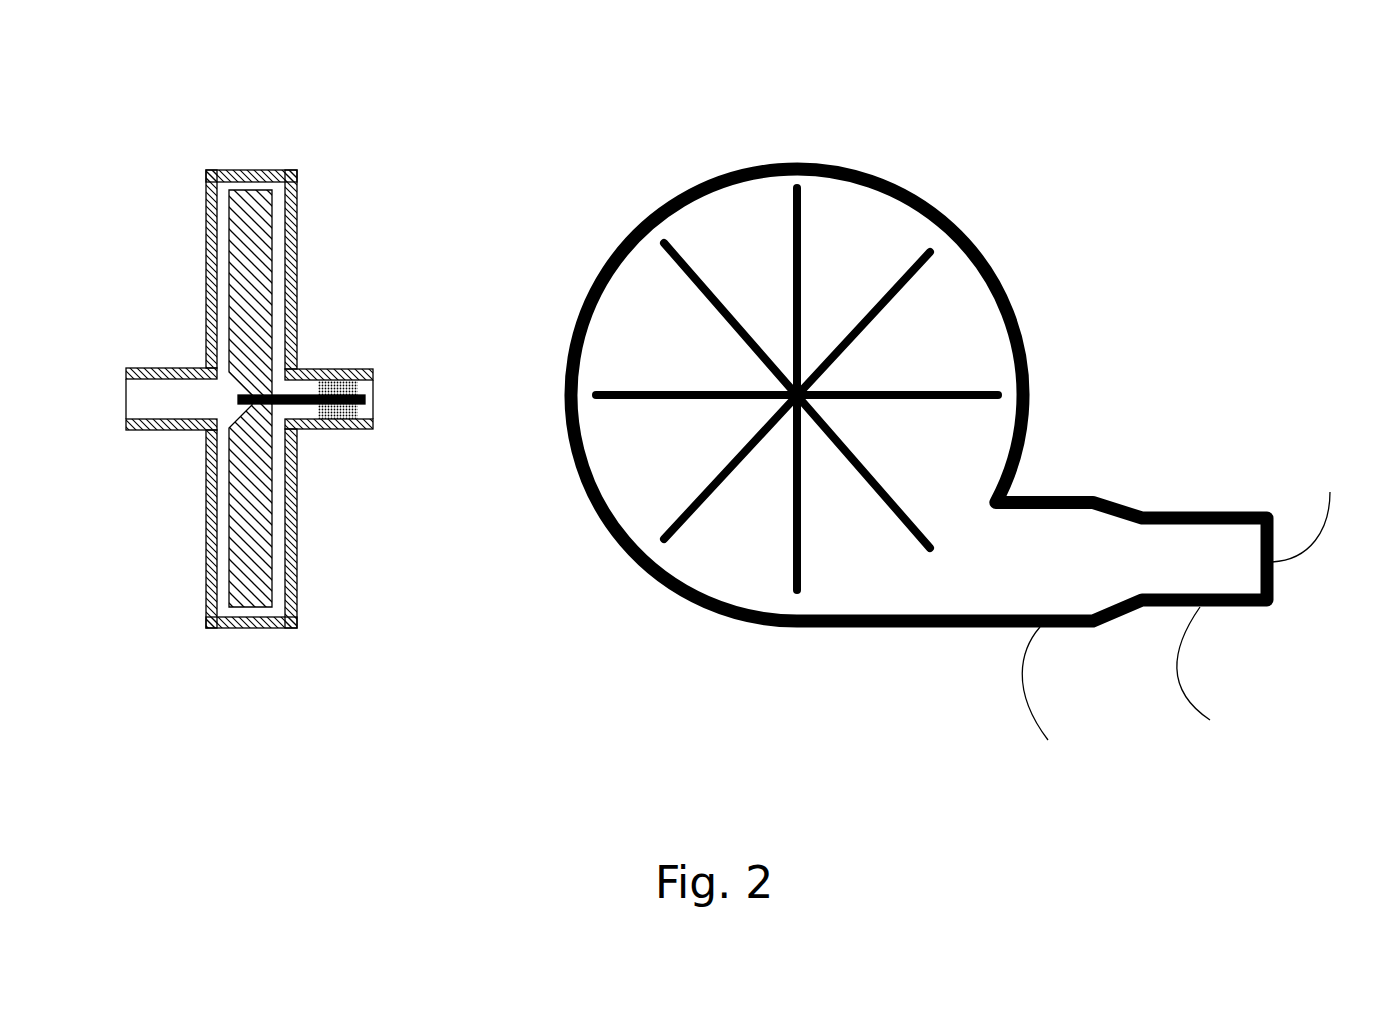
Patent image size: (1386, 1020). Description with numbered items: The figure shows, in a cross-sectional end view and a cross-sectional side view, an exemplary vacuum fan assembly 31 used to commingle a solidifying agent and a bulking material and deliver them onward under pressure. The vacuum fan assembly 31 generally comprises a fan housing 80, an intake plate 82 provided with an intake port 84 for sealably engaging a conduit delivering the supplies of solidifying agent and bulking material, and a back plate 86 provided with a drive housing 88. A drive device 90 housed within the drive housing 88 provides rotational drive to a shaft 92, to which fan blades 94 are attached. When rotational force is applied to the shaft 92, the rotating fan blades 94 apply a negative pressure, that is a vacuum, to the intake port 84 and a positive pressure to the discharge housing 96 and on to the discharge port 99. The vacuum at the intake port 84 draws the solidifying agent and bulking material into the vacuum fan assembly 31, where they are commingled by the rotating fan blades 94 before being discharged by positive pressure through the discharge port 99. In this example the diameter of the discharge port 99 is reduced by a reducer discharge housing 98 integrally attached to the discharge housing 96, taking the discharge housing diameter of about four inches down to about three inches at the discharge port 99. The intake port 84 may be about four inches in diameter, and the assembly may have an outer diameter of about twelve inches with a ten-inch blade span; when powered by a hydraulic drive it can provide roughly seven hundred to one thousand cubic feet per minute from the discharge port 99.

The vacuum fan assembly 31 is at (716, 398).
The fan housing 80 is at (681, 424).
The intake plate 82 is at (207, 263).
The intake port 84 is at (170, 368).
The back plate 86 is at (298, 228).
The drive housing 88 is at (322, 370).
The drive device 90 is at (358, 412).
The shaft 92 is at (300, 405).
The fan blades 94 is at (297, 510).
The discharge housing 96 is at (1055, 697).
The reducer discharge housing 98 is at (1215, 677).
The discharge port 99 is at (1312, 512).